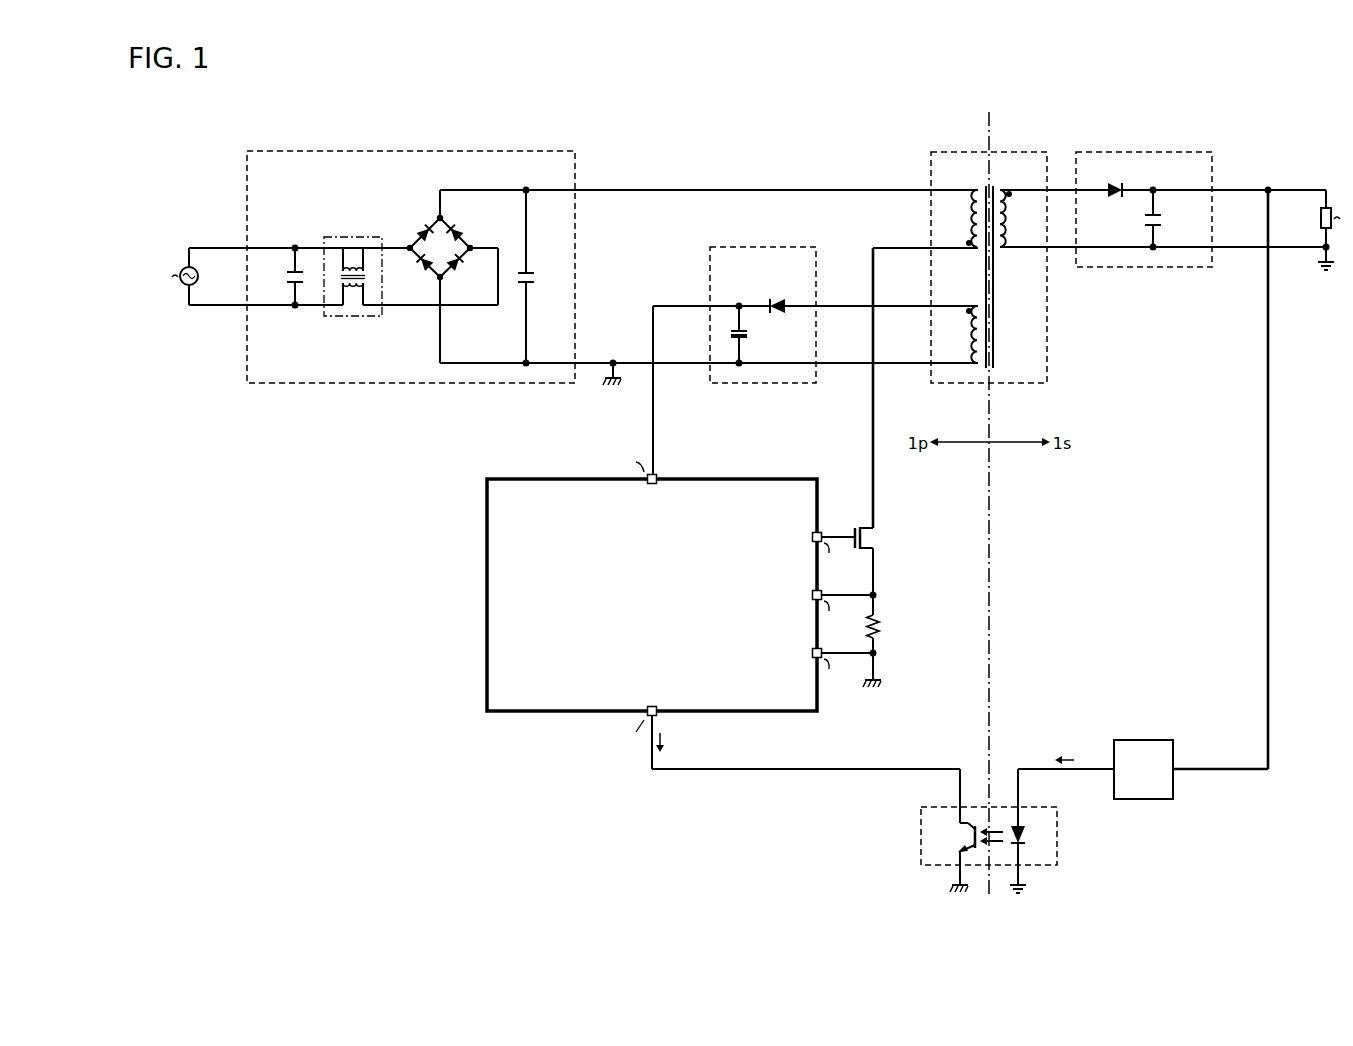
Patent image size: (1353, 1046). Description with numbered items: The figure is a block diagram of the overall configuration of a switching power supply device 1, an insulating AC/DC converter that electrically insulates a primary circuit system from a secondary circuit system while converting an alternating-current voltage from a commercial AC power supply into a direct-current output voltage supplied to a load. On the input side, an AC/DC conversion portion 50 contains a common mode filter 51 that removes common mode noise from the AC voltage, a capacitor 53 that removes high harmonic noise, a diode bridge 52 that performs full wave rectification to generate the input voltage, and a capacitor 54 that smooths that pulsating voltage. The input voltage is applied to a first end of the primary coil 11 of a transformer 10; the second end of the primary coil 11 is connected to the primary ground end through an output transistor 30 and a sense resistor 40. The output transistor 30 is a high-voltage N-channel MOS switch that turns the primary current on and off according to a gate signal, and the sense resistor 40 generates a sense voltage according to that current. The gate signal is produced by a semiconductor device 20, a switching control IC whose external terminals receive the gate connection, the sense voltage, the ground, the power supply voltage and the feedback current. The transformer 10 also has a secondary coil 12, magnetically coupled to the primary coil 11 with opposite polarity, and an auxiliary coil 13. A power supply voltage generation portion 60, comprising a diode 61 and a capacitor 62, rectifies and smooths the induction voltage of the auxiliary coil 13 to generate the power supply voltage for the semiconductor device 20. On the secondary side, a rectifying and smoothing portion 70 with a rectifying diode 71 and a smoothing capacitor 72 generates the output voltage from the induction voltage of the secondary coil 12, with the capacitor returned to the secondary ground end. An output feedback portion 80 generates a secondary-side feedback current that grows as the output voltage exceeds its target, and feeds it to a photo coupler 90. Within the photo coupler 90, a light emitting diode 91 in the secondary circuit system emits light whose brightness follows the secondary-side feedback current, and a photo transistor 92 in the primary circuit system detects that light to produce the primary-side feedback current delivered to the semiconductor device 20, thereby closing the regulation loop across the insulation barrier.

The switching power supply device 1 is at (170, 170).
The transformer 10 is at (1024, 152).
The primary coil 11 is at (970, 188).
The secondary coil 12 is at (1010, 188).
The auxiliary coil 13 is at (967, 337).
The semiconductor device 20 is at (735, 478).
The output transistor 30 is at (879, 539).
The sense resistor 40 is at (883, 626).
The AC/DC conversion portion 50 is at (418, 151).
The common mode filter 51 is at (354, 237).
The diode bridge 52 is at (469, 230).
The capacitor 53 is at (281, 278).
The capacitor 54 is at (535, 278).
The power supply voltage generation portion 60 is at (766, 247).
The diode 61 is at (779, 294).
The capacitor 62 is at (750, 338).
The rectifying and smoothing portion 70 is at (1146, 152).
The rectifying diode 71 is at (1116, 183).
The smoothing capacitor 72 is at (1164, 221).
The output feedback portion 80 is at (1145, 740).
The photo coupler 90 is at (1038, 807).
The light emitting diode 91 is at (1027, 840).
The photo transistor 92 is at (956, 840).